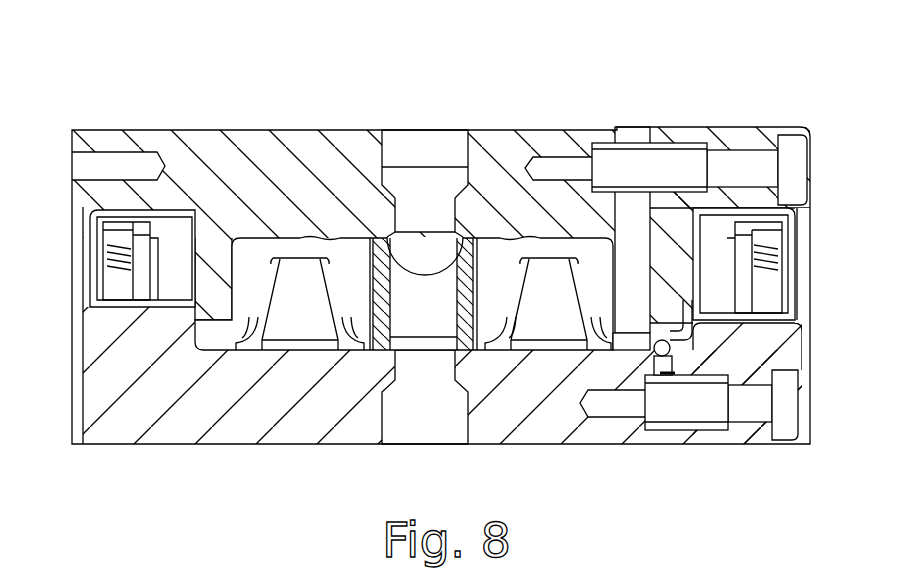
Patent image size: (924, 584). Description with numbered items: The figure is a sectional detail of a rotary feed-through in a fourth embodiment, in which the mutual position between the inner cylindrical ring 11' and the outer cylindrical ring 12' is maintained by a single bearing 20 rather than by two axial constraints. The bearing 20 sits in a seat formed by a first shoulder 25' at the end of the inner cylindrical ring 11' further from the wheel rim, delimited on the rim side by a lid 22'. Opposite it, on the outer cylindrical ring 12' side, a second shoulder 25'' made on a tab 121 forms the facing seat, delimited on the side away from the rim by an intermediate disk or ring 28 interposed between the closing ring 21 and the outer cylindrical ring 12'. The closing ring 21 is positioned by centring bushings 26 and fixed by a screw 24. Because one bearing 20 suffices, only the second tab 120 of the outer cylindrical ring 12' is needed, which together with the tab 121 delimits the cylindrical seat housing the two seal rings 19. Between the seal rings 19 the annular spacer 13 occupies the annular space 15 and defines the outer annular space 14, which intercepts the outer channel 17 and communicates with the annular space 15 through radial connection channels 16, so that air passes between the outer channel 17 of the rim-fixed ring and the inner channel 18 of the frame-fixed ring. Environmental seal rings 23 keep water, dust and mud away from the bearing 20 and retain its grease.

The inner cylindrical ring 11' is at (442, 399).
The outer cylindrical ring 12' is at (344, 195).
The annular spacer 13 is at (465, 280).
The outer annular space 14 is at (412, 262).
The annular space 15 is at (412, 349).
The radial connection channel 16 is at (412, 305).
The outer channel 17 is at (420, 148).
The inner channel 18 is at (428, 425).
The seal ring 19 is at (308, 316).
The bearing 20 is at (617, 345).
The closing ring 21 is at (728, 146).
The lid 22' is at (782, 379).
The environmental seal ring 23 is at (97, 257).
The screw 24 is at (753, 162).
The first shoulder 25' is at (663, 433).
The second shoulder 25'' is at (776, 308).
The centring bushing 26 is at (668, 140).
The intermediate disk or ring 28 is at (628, 128).
The second tab 120 is at (216, 282).
The tab 121 is at (668, 286).